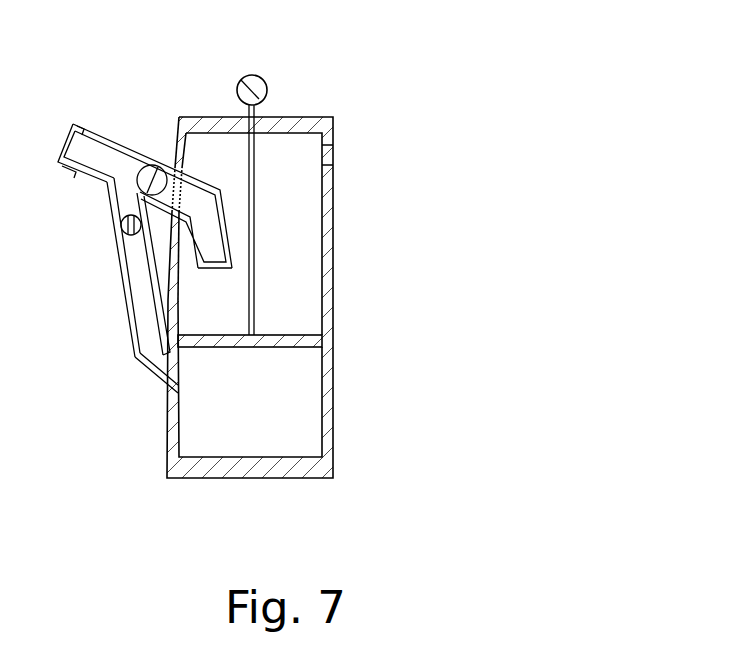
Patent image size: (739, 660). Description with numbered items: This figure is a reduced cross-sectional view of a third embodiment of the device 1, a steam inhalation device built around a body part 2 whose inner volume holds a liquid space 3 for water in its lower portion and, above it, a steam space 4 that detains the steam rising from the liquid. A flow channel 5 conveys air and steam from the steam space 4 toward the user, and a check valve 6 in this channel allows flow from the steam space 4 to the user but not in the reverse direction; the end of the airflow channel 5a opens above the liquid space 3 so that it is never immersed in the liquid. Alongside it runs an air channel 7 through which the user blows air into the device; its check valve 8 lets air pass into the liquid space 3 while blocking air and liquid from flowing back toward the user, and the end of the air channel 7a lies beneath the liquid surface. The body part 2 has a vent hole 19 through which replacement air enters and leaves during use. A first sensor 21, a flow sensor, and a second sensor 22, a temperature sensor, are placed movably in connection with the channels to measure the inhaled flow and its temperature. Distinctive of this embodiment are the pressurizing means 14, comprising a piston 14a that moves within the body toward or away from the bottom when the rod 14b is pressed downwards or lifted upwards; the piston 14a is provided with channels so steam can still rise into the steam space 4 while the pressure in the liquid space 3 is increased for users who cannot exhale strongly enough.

The device 1 is at (349, 96).
The body part 2 is at (333, 258).
The liquid space 3 is at (256, 444).
The steam space 4 is at (301, 291).
The flow channel 5 is at (199, 191).
The end of the airflow channel 5a is at (229, 270).
The check valve 6 is at (139, 163).
The air channel 7 is at (133, 277).
The end of the air channel 7a is at (175, 381).
The check valve 8 is at (120, 223).
The pressurizing means 14 is at (267, 72).
The piston 14a is at (284, 348).
The rod 14b is at (256, 210).
The vent hole 19 is at (333, 150).
The first sensor 21 is at (108, 156).
The second sensor 22 is at (89, 154).